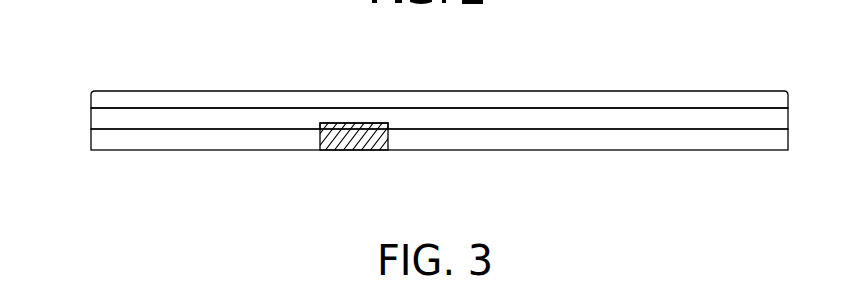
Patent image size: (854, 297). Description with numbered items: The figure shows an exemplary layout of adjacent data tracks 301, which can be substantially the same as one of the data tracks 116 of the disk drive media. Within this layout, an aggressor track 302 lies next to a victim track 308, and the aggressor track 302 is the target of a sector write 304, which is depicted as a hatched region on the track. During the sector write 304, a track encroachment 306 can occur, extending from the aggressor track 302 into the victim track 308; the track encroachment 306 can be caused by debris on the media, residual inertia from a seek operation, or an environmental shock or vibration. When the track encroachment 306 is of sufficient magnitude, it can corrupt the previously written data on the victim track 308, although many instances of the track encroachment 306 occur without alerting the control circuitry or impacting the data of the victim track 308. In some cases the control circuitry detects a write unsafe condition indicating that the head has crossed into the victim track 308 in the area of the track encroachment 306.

The adjacent data tracks 301 is at (167, 45).
The data tracks 116 is at (440, 91).
The victim track 308 is at (102, 120).
The aggressor track 302 is at (182, 138).
The sector write 304 is at (362, 150).
The track encroachment 306 is at (342, 123).